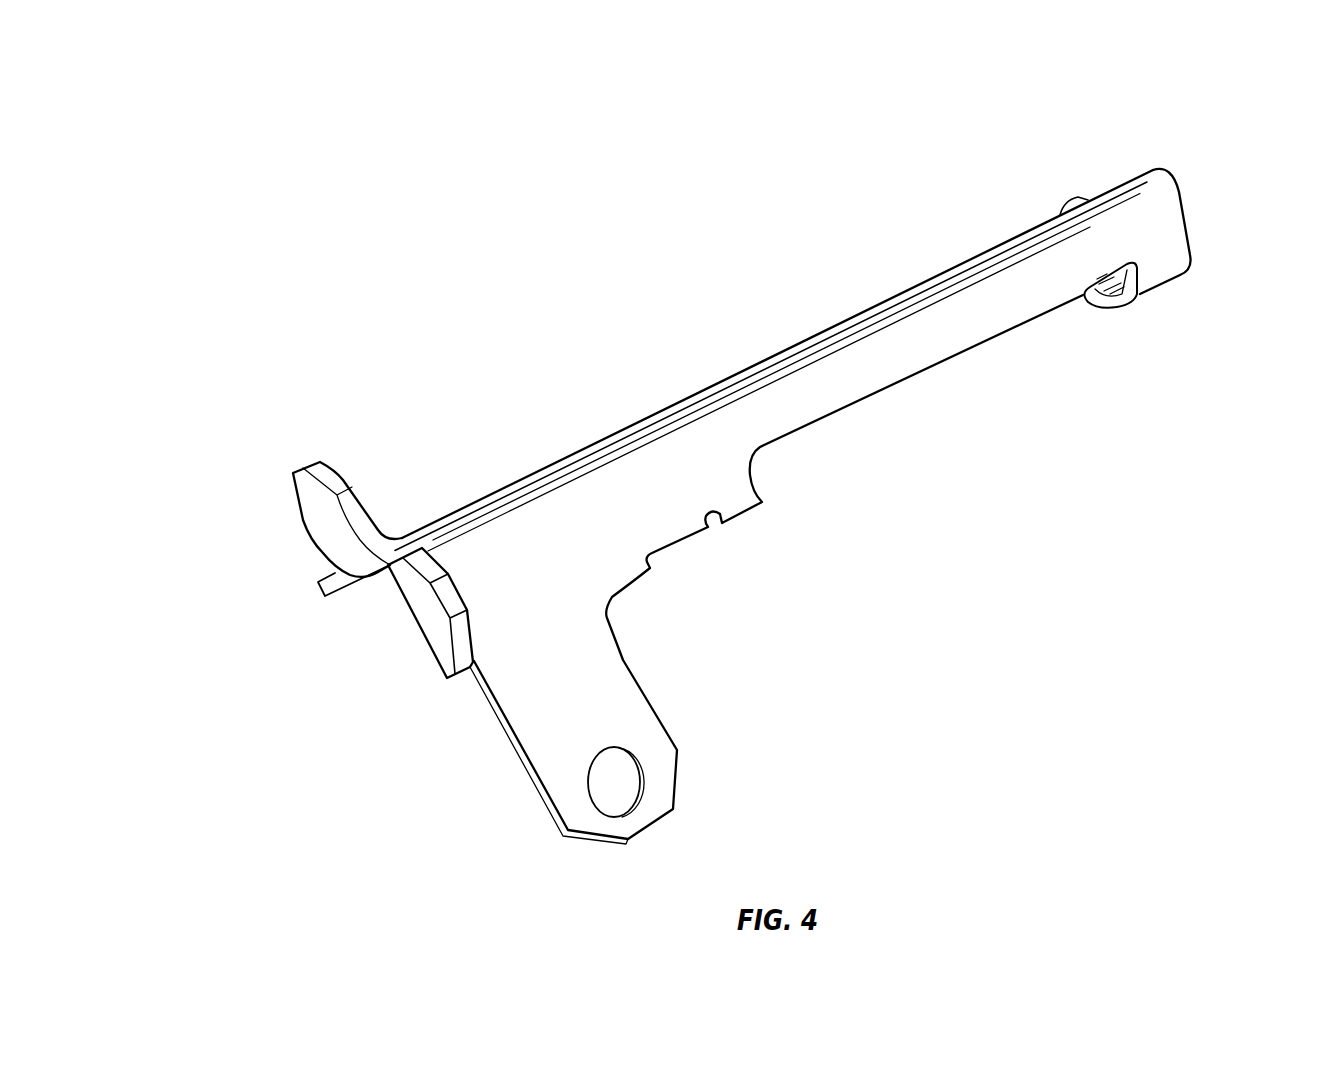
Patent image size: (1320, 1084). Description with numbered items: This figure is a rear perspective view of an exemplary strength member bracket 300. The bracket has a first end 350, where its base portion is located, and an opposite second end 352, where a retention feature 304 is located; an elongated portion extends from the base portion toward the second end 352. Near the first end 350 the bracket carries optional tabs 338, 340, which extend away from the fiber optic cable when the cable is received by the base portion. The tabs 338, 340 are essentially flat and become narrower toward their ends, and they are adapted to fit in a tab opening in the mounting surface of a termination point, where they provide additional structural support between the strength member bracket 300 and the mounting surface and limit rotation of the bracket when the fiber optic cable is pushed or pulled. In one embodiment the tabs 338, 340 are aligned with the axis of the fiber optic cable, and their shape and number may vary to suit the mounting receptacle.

The strength member bracket 300 is at (578, 272).
The second end 352 is at (1130, 155).
The retention feature 304 is at (1167, 312).
The tab 340 is at (355, 520).
The first end 350 is at (268, 542).
The tab 338 is at (426, 610).